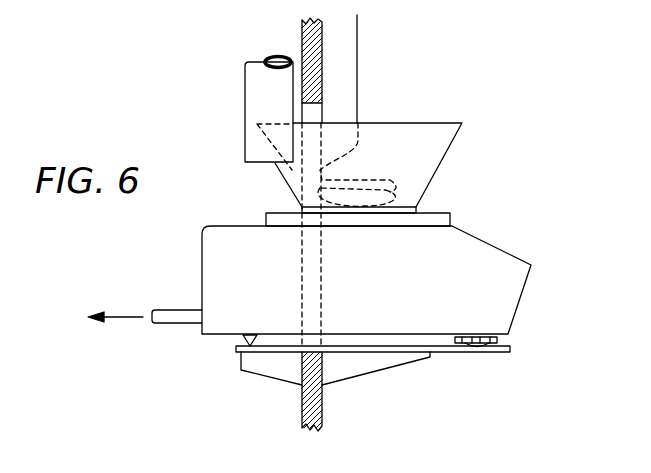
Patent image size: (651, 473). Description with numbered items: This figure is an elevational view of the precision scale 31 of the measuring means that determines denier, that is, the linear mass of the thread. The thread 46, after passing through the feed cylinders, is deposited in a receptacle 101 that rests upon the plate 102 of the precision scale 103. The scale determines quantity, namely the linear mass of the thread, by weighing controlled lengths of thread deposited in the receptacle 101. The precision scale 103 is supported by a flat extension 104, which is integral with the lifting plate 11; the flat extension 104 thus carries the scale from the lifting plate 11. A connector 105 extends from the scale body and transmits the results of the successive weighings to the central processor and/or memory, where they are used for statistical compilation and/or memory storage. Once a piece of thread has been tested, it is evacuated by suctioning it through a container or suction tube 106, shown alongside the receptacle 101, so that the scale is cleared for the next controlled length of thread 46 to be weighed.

The lifting plate 11 is at (304, 418).
The precision scale 31 is at (434, 108).
The thread 46 is at (357, 50).
The receptacle 101 is at (438, 152).
The plate 102 is at (452, 215).
The precision scale 103 is at (515, 290).
The flat extension 104 is at (387, 360).
The connector 105 is at (165, 313).
The suction tube 106 is at (253, 105).